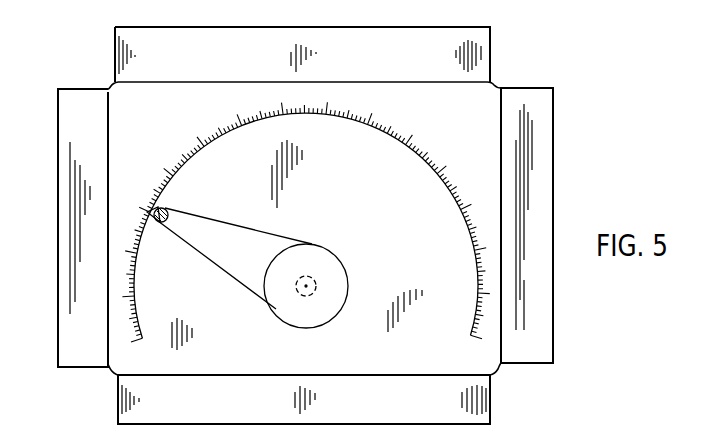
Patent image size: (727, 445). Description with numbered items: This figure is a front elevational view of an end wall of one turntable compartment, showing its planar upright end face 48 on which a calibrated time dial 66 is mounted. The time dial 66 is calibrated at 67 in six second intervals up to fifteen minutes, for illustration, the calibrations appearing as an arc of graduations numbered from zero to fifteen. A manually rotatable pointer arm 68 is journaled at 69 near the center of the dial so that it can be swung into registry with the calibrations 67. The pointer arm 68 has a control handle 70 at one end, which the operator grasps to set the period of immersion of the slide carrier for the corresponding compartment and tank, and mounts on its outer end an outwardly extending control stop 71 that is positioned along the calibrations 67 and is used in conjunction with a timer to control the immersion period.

The end face 48 is at (84, 204).
The time dial 66 is at (462, 150).
The calibrations 67 is at (126, 326).
The pointer arm 68 is at (240, 273).
The journal 69 is at (318, 282).
The control handle 70 is at (320, 249).
The control stop 71 is at (168, 213).